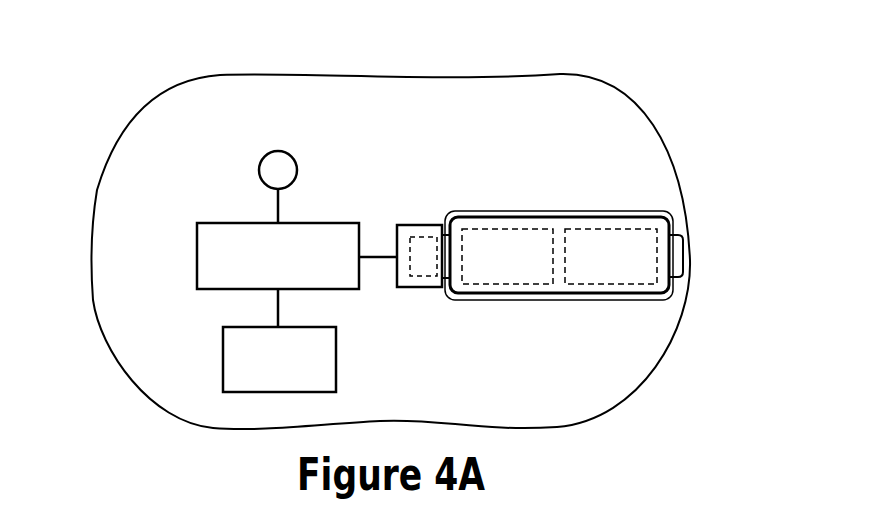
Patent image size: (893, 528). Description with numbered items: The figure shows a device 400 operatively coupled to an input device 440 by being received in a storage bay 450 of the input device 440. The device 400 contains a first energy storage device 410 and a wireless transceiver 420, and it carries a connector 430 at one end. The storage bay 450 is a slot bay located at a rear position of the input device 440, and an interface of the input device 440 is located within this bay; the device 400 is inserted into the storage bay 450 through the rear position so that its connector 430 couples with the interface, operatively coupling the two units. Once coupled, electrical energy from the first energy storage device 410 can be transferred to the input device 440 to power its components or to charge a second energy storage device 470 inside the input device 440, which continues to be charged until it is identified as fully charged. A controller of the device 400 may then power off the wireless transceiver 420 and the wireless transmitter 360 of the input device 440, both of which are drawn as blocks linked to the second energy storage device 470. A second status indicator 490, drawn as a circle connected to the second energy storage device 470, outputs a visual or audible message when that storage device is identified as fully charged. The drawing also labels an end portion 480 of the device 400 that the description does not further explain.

The input device 440 is at (143, 88).
The second status indicator 490 is at (298, 168).
The second energy storage device 470 is at (197, 258).
The wireless transmitter 360 is at (223, 360).
The storage bay 450 is at (420, 288).
The connector 430 is at (425, 237).
The device 400 is at (672, 225).
The wireless transceiver 420 is at (487, 268).
The first energy storage device 410 is at (590, 268).
The battery terminal 480 is at (684, 256).